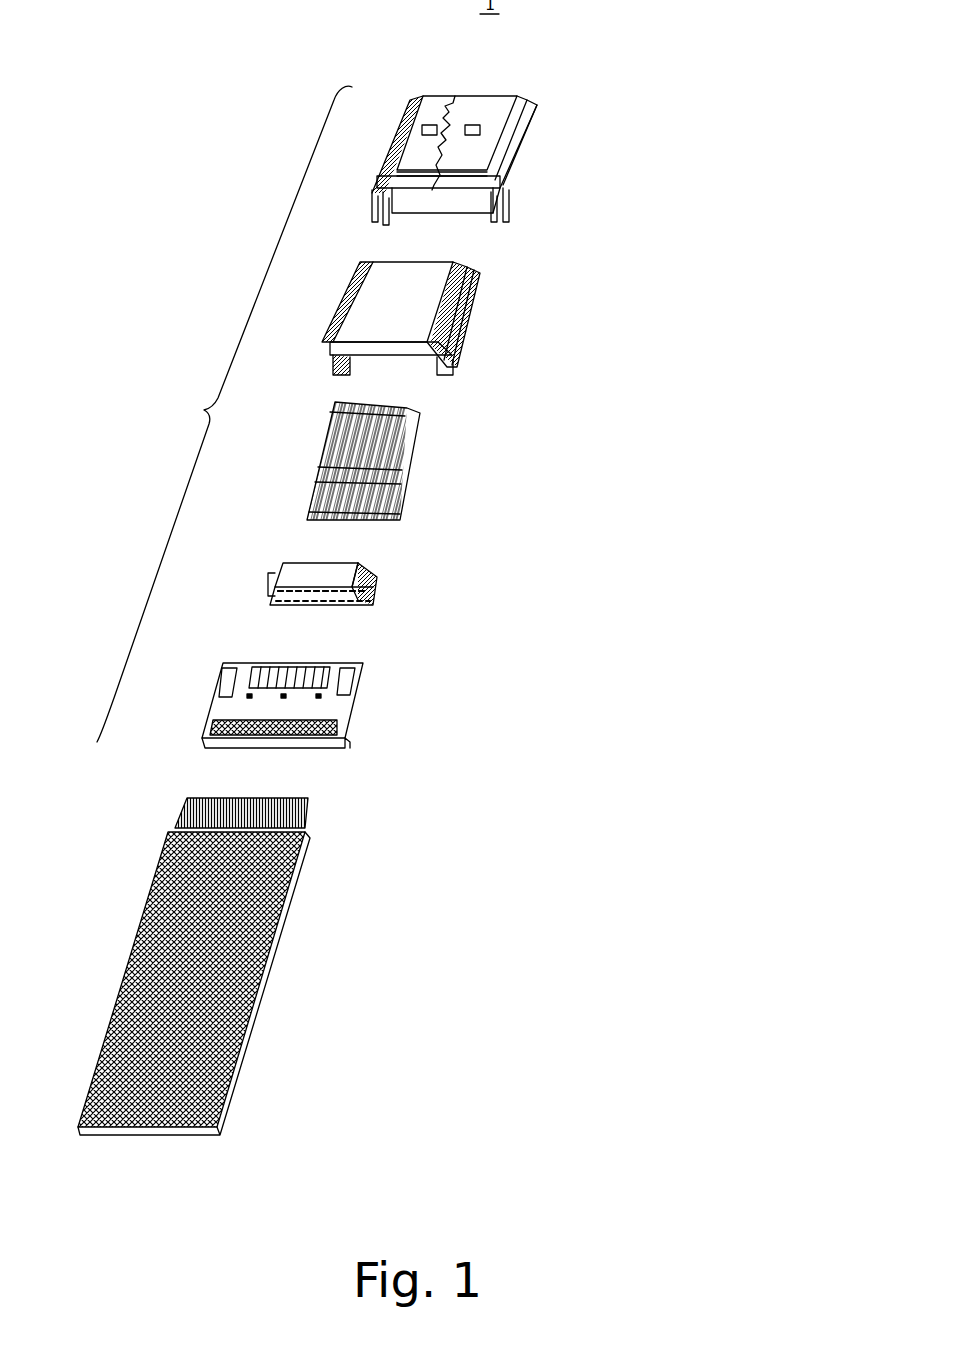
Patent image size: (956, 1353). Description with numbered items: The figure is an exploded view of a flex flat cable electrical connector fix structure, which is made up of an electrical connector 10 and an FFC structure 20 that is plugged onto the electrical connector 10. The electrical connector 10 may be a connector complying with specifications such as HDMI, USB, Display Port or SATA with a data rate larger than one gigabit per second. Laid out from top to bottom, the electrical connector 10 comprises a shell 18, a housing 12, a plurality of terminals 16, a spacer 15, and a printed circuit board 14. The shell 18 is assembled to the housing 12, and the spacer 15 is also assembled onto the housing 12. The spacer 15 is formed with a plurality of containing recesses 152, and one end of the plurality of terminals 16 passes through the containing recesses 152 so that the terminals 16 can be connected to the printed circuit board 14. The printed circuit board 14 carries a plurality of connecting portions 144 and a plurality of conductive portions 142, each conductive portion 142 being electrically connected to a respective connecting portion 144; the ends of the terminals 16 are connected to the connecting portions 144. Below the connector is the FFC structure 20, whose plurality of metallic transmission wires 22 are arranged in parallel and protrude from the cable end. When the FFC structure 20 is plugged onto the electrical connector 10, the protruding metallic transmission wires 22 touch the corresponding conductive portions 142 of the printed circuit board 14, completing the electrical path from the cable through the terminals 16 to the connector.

The electrical connector 10 is at (224, 414).
The housing 12 is at (423, 290).
The printed circuit board 14 is at (330, 702).
The conductive portions 142 is at (337, 732).
The connecting portions 144 is at (333, 678).
The spacer 15 is at (377, 587).
The containing recesses 152 is at (274, 601).
The terminals 16 is at (403, 463).
The shell 18 is at (480, 103).
The FFC structure 20 is at (273, 942).
The metallic transmission wires 22 is at (308, 808).